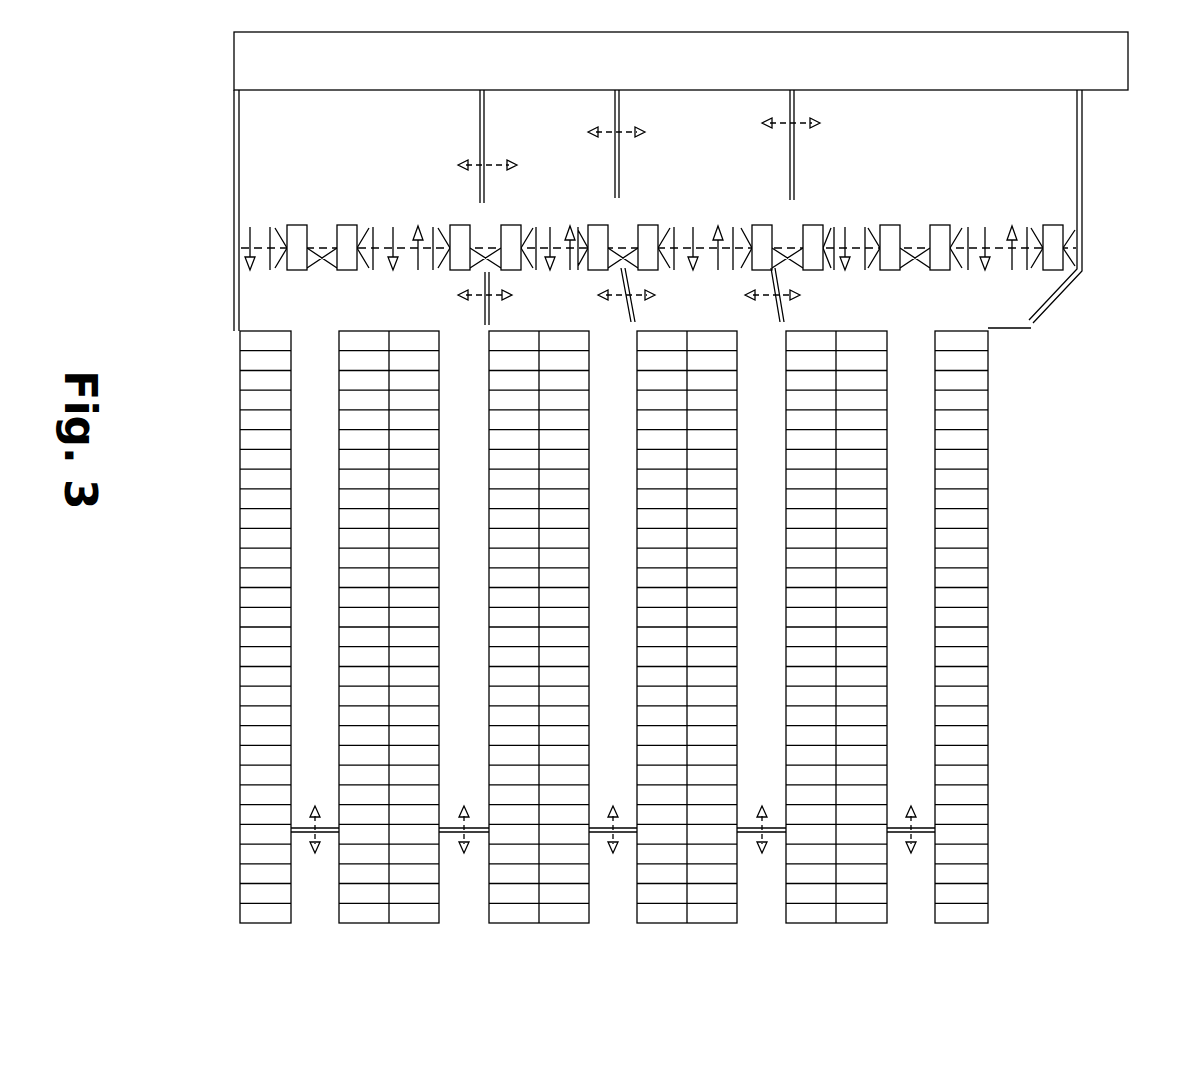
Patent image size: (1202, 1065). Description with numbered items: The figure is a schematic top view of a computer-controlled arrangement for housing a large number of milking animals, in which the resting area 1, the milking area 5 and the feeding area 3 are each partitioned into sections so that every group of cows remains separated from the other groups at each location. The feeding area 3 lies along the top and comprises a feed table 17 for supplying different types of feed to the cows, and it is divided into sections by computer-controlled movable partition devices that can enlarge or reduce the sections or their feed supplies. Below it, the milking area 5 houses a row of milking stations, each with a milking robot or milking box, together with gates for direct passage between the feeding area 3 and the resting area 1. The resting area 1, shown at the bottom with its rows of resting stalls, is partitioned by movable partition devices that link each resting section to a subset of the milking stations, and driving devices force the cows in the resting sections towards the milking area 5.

The resting area 1 is at (224, 331).
The feeding area 3 is at (224, 32).
The milking area 5 is at (224, 226).
The feed table 17 is at (1130, 66).